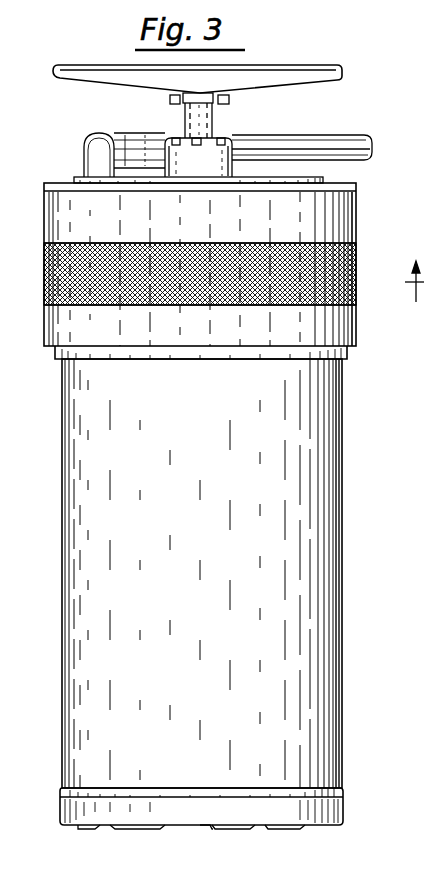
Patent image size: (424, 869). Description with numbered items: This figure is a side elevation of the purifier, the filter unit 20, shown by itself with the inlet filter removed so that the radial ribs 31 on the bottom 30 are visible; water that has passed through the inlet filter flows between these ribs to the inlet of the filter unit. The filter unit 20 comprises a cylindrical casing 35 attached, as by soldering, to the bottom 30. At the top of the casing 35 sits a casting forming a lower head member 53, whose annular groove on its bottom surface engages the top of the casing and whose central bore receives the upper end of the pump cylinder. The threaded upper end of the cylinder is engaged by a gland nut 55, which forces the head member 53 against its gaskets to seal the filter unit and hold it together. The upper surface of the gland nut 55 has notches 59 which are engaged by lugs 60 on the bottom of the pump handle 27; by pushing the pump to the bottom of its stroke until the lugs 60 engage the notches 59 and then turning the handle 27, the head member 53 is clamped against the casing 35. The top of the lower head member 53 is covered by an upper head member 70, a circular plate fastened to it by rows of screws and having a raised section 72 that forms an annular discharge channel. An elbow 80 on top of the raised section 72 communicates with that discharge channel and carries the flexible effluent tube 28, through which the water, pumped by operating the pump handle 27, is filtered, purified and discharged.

The filter unit 20 is at (345, 455).
The pump handle 27 is at (250, 73).
The effluent tube 28 is at (343, 135).
The bottom 30 is at (343, 804).
The radial ribs 31 is at (212, 826).
The cylindrical casing 35 is at (333, 613).
The lower head member 53 is at (355, 230).
The gland nut 55 is at (209, 163).
The notches 59 is at (230, 133).
The lugs 60 is at (229, 99).
The upper head member 70 is at (352, 183).
The raised section 72 is at (277, 176).
The elbow 80 is at (95, 149).